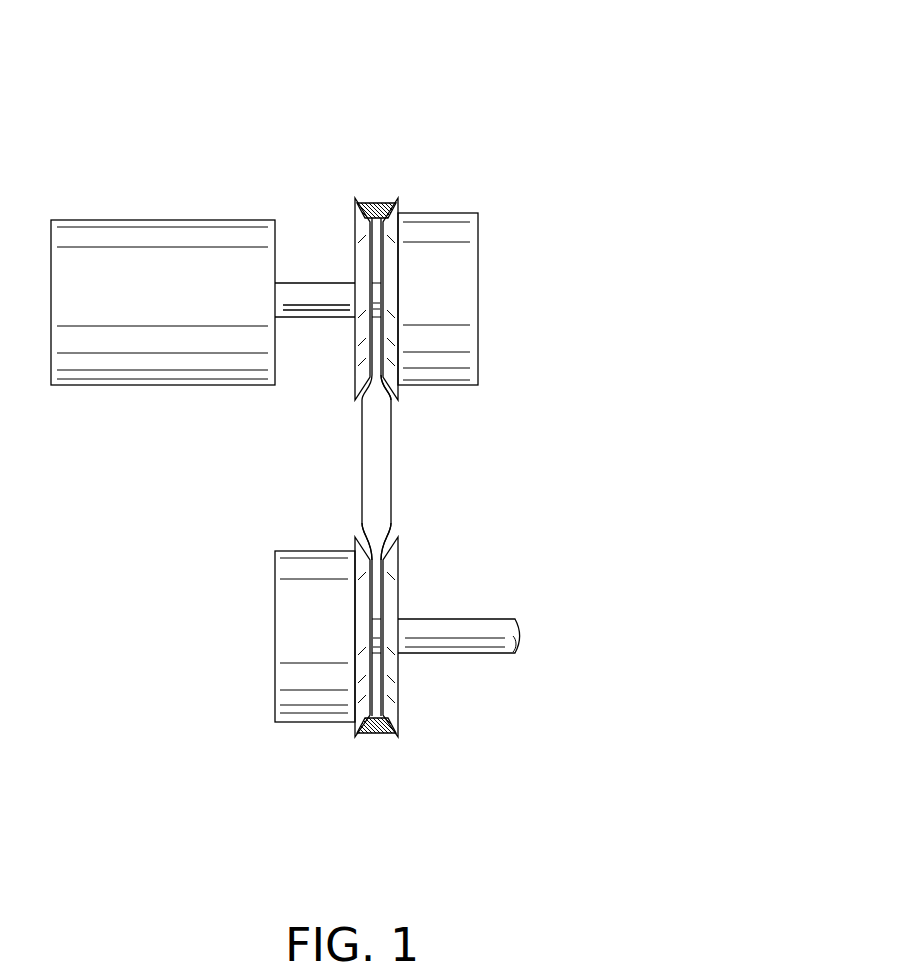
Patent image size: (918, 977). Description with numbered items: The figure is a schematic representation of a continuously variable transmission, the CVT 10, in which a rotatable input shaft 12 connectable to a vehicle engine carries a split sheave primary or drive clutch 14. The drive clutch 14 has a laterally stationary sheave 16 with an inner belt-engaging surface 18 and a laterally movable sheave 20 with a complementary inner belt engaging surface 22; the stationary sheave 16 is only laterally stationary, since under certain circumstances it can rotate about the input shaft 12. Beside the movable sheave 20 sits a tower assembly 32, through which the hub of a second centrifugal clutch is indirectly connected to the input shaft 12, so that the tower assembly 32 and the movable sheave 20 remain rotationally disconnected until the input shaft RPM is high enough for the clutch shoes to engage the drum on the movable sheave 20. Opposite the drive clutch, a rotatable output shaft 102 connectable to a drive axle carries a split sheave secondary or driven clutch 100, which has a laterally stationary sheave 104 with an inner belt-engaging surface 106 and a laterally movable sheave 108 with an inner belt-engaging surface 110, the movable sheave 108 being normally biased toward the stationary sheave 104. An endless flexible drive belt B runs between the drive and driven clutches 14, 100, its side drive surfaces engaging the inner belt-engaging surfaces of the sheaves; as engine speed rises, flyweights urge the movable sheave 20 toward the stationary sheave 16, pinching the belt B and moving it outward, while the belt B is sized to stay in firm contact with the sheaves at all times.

The continuously variable transmission 10 is at (445, 117).
The input shaft 12 is at (306, 292).
The drive clutch 14 is at (397, 282).
The stationary sheave 16 is at (363, 354).
The inner belt-engaging surface 18 is at (373, 208).
The movable sheave 20 is at (392, 300).
The inner belt engaging surface 22 is at (380, 387).
The tower assembly 32 is at (445, 252).
The drive belt B is at (377, 468).
The driven clutch 100 is at (410, 692).
The output shaft 102 is at (455, 653).
The stationary sheave 104 is at (388, 688).
The inner belt-engaging surface 106 is at (386, 545).
The movable sheave 108 is at (363, 618).
The inner belt-engaging surface 110 is at (368, 545).